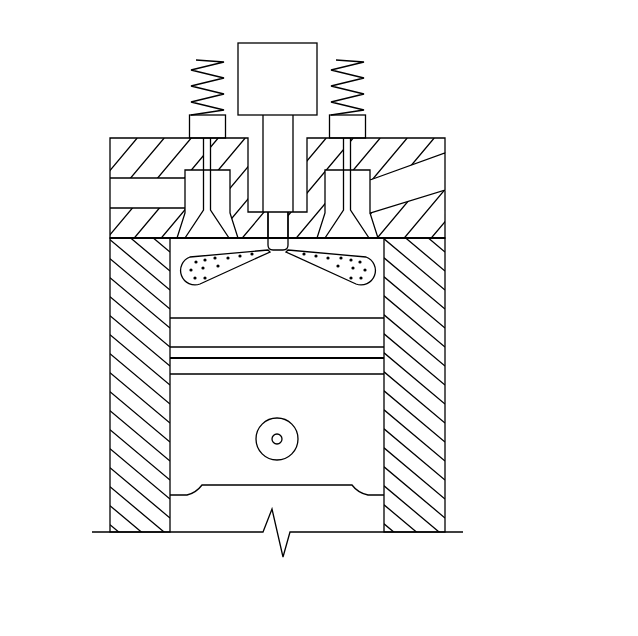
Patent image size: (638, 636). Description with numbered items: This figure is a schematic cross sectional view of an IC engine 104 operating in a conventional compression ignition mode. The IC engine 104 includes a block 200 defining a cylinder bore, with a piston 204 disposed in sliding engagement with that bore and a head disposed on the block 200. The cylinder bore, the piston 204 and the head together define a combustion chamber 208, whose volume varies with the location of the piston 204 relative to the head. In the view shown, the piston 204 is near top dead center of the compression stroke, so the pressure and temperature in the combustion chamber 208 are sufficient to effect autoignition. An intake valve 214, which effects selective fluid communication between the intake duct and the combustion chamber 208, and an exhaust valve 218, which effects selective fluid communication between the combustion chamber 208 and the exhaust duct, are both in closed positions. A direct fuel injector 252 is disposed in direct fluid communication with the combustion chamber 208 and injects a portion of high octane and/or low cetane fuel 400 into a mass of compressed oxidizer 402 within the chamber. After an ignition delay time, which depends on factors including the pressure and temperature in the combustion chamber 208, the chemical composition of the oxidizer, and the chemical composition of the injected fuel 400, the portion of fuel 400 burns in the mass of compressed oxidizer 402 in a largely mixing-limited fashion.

The IC engine 104 is at (488, 38).
The block 200 is at (445, 318).
The piston 204 is at (358, 426).
The combustion chamber 208 is at (296, 298).
The intake valve 214 is at (353, 158).
The exhaust valve 218 is at (200, 158).
The direct fuel injector 252 is at (293, 92).
The fuel 400 is at (355, 270).
The mass of compressed oxidizer 402 is at (200, 300).